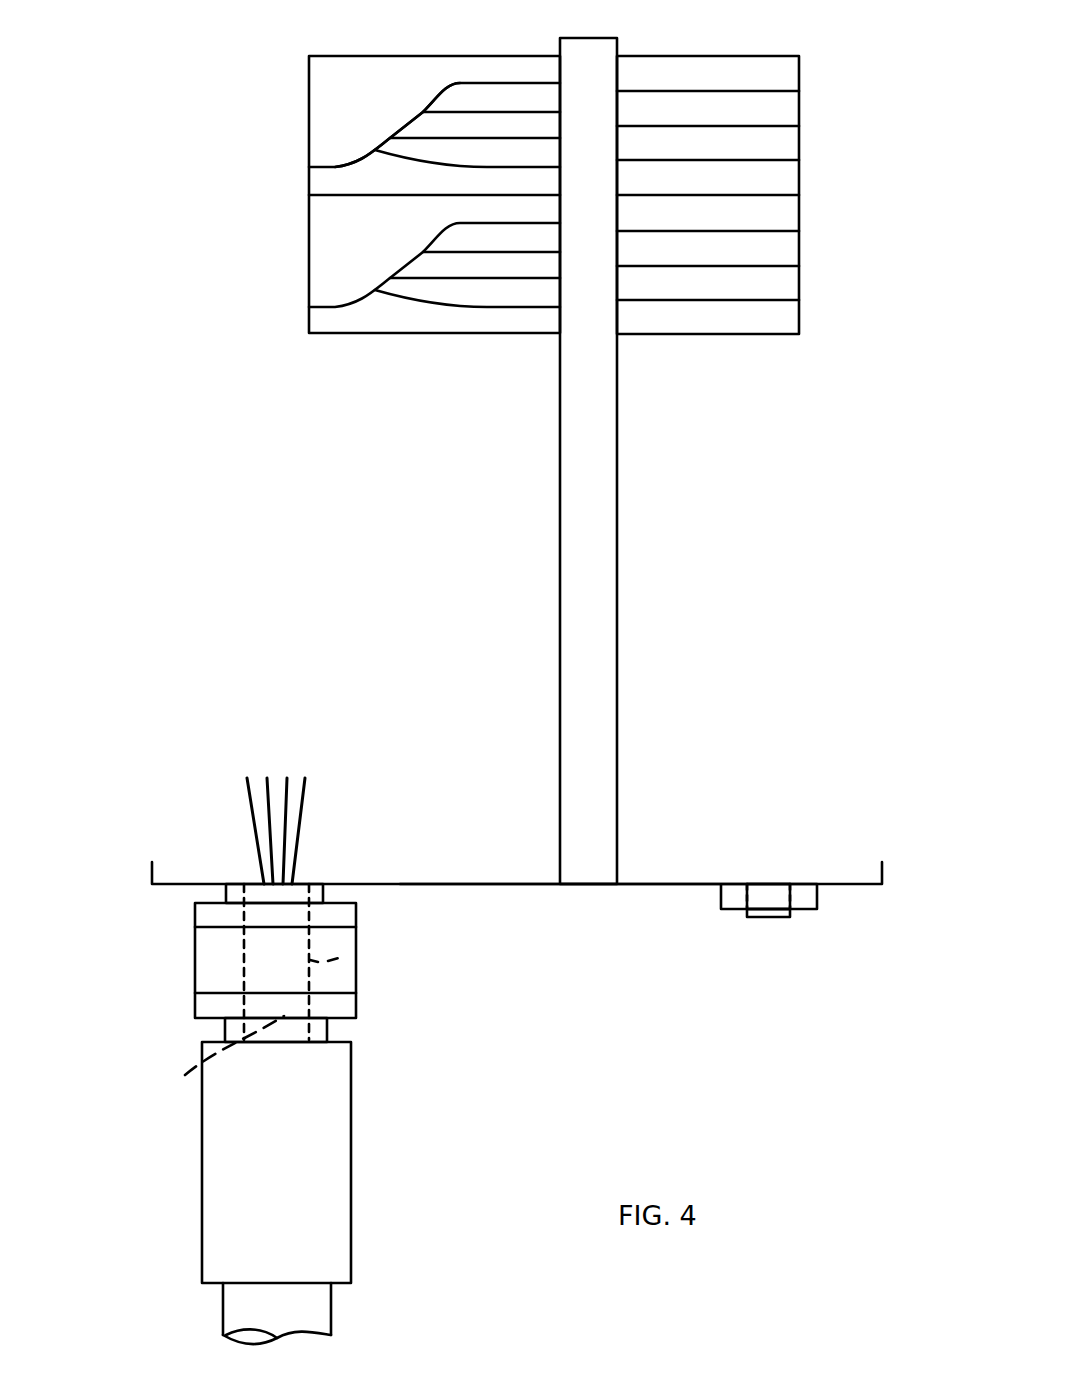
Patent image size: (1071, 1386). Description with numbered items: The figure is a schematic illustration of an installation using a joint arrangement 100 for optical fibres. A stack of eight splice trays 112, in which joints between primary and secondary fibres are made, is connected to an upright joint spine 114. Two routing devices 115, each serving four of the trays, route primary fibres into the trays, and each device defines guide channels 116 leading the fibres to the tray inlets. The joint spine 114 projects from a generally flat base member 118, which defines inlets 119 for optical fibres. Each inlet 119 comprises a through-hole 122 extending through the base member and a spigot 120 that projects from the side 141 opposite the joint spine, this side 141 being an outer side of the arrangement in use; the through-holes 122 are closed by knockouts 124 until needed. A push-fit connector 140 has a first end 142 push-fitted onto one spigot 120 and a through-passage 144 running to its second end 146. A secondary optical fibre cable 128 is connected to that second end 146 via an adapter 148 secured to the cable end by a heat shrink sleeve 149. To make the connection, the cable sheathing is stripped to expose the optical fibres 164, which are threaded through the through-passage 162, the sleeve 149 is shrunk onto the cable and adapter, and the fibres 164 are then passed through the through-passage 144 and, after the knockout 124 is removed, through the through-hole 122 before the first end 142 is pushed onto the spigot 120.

The joint arrangement 100 is at (262, 466).
The splice tray 112 is at (787, 80).
The joint spine 114 is at (618, 650).
The routing device 115 is at (309, 76).
The guide channel 116 is at (472, 110).
The base member 118 is at (134, 857).
The inlet 119 is at (304, 864).
The spigot 120 is at (327, 893).
The through-hole 122 is at (772, 884).
The knockout 124 is at (755, 917).
The secondary optical fibre cable 128 is at (223, 1315).
The push-fit connector 140 is at (184, 962).
The side 141 is at (522, 884).
The first end 142 is at (195, 908).
The through-passage 144 is at (356, 958).
The second end 146 is at (195, 1008).
The adapter 148 is at (327, 1028).
The heat shrink sleeve 149 is at (351, 1222).
The through-passage 162 is at (214, 1063).
The optical fibres 164 is at (318, 784).